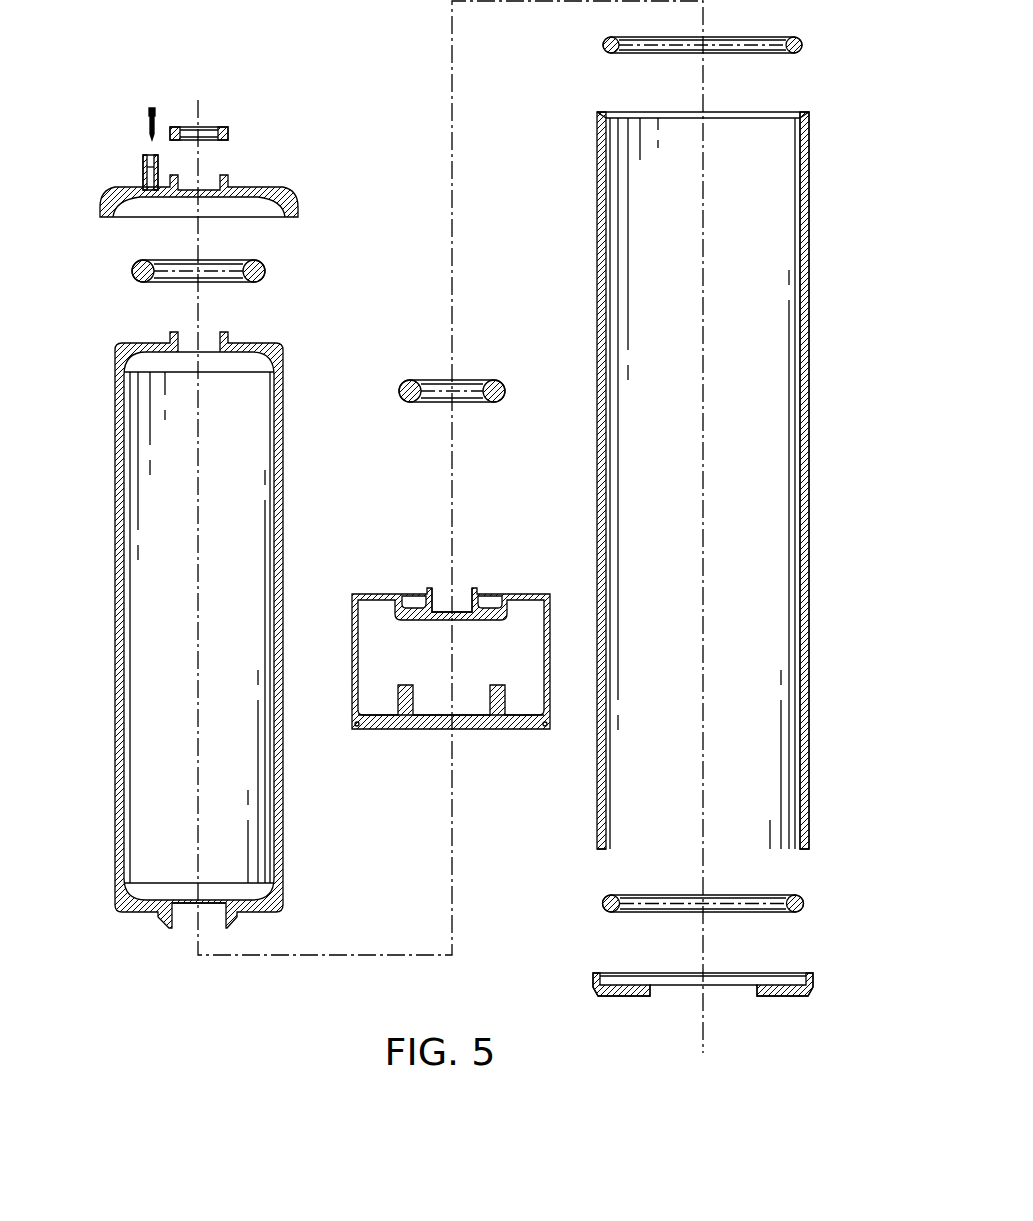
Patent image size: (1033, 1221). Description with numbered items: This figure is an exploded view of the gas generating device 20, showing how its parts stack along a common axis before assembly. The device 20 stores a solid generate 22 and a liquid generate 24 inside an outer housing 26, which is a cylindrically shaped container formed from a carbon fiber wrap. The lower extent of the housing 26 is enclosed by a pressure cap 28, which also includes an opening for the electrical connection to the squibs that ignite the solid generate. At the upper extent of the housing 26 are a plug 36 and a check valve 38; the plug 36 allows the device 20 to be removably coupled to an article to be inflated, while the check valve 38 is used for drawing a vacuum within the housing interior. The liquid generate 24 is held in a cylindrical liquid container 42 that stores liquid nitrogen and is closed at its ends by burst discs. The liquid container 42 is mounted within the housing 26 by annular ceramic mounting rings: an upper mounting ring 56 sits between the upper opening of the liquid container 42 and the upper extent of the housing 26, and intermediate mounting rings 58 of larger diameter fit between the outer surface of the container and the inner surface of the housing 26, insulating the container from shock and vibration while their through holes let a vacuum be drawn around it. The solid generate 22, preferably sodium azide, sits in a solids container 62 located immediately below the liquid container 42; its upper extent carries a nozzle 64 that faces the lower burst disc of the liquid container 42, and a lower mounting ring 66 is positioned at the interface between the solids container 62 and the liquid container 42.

The gas generating device 20 is at (816, 95).
The solid generate 22 is at (437, 628).
The liquid generate 24 is at (178, 630).
The outer housing 26 is at (793, 497).
The pressure cap 28 is at (785, 980).
The plug 36 is at (190, 180).
The check valve 38 is at (150, 154).
The liquid container 42 is at (162, 707).
The upper mounting ring 56 is at (152, 283).
The intermediate mounting rings 58 is at (635, 53).
The solids container 62 is at (383, 717).
The nozzle 64 is at (452, 593).
The lower mounting ring 66 is at (468, 403).